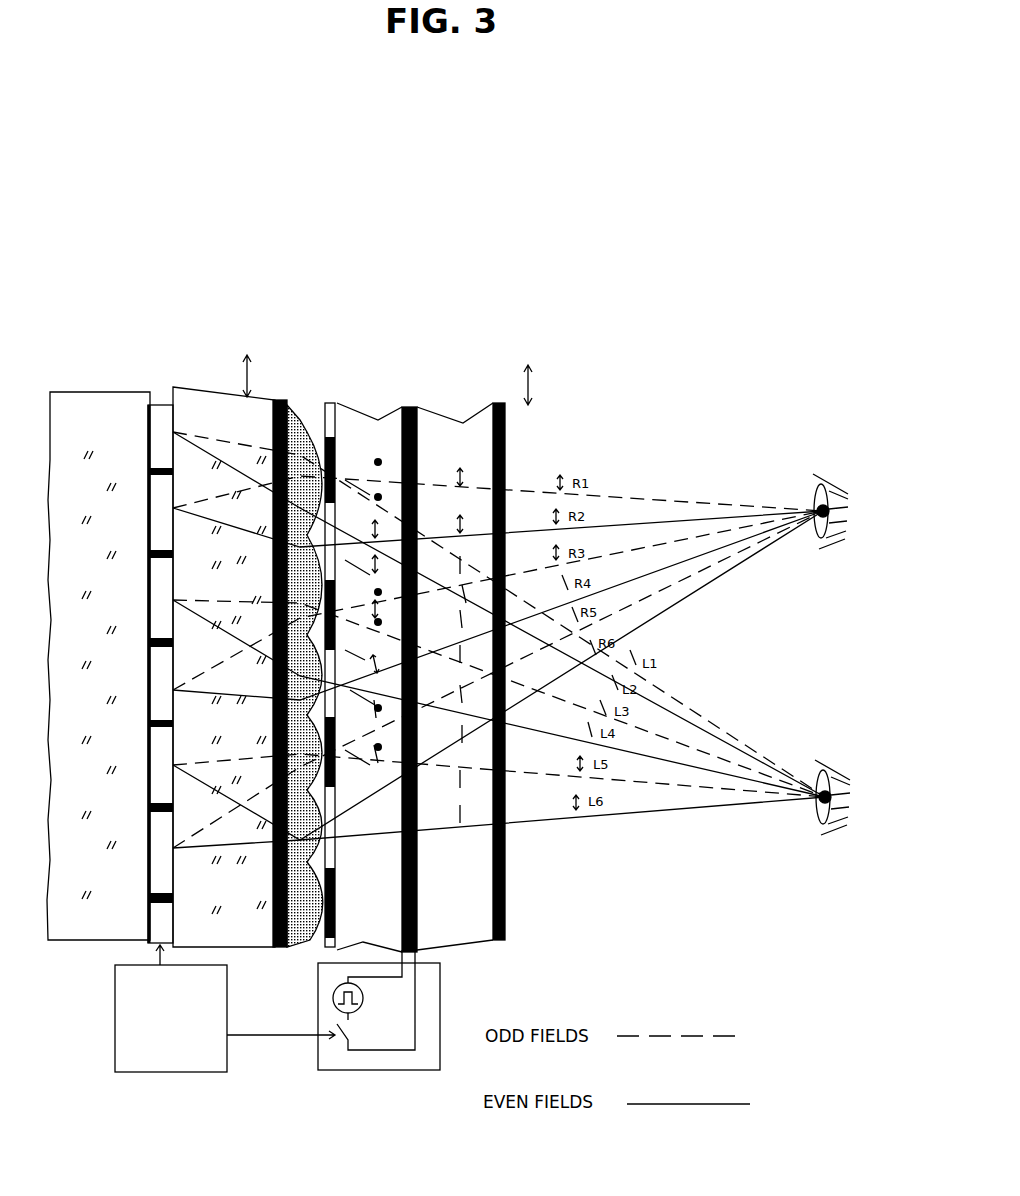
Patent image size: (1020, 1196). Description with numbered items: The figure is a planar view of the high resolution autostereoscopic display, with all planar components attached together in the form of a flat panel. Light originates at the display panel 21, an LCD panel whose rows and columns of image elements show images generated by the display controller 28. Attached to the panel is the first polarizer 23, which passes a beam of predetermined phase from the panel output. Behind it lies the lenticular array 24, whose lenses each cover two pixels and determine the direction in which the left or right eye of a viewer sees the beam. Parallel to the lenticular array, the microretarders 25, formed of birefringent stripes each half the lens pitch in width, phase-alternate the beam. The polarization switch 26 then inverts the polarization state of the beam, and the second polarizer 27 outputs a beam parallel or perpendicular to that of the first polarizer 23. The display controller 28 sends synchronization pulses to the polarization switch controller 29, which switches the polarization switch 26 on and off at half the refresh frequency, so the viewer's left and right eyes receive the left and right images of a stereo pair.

The display panel 21 is at (275, 400).
The first polarizer 23 is at (272, 400).
The lenticular array 24 is at (300, 418).
The microretarders 25 is at (326, 402).
The polarization switch 26 is at (478, 398).
The second polarizer 27 is at (496, 402).
The display controller 28 is at (225, 1008).
The polarization switch controller 29 is at (354, 1010).